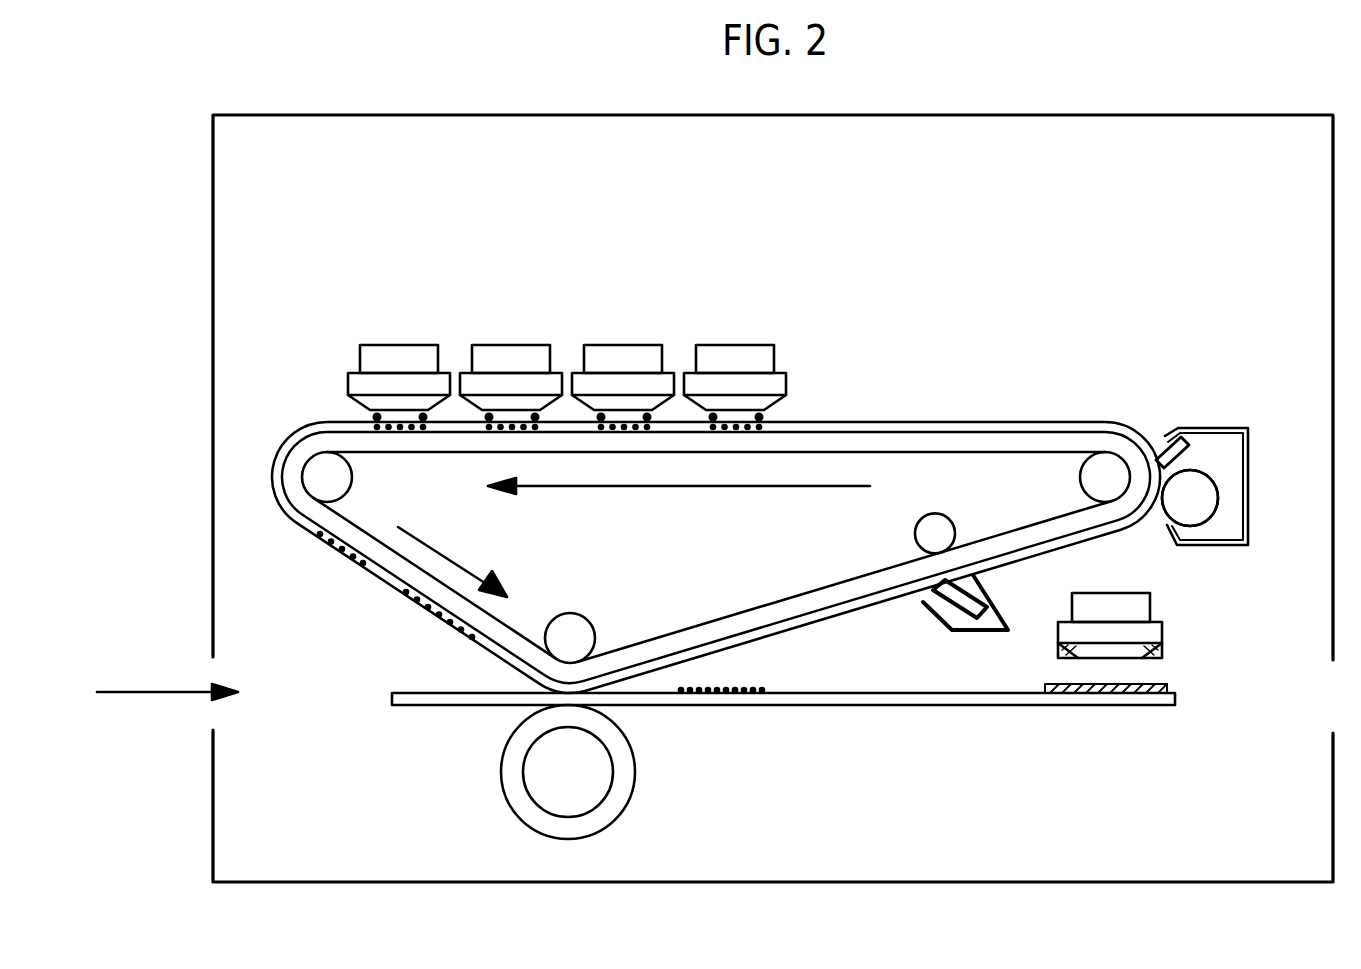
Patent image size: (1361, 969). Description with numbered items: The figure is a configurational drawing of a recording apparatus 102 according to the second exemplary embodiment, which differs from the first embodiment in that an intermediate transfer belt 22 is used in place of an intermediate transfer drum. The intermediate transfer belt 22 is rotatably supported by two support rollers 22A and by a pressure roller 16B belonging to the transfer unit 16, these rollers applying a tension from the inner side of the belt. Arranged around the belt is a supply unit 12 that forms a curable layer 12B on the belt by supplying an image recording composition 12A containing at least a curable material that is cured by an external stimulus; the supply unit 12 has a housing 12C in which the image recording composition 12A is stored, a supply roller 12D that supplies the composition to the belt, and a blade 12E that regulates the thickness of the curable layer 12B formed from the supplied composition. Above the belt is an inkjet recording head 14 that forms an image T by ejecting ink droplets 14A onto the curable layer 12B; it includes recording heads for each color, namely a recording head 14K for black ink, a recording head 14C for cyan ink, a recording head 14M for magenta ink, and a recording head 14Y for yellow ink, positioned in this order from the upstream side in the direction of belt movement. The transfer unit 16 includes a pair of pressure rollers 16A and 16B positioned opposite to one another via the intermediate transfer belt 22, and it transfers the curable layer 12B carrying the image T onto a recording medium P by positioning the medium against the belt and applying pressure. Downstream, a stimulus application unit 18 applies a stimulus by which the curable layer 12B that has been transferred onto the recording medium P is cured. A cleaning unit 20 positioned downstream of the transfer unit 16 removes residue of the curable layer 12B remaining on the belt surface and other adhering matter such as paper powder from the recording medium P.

The recording apparatus 102 is at (144, 248).
The inkjet recording head 14 is at (773, 272).
The recording head 14Y is at (398, 345).
The recording head 14M is at (512, 345).
The recording head 14C is at (623, 345).
The recording head 14K is at (735, 345).
The ink droplets 14A is at (374, 416).
The intermediate transfer belt 22 is at (932, 447).
The support rollers 22A is at (348, 479).
The supply unit 12 is at (1225, 475).
The image recording composition 12A is at (1218, 432).
The curable layer 12B is at (1016, 421).
The housing 12C is at (1232, 478).
The supply roller 12D is at (1205, 515).
The blade 12E is at (1158, 443).
The stimulus application unit 18 is at (1122, 593).
The cleaning unit 20 is at (992, 588).
The transfer unit 16 is at (654, 726).
The pressure roller 16A is at (636, 797).
The pressure roller 16B is at (597, 640).
The recording medium P is at (438, 706).
The image T is at (318, 537).